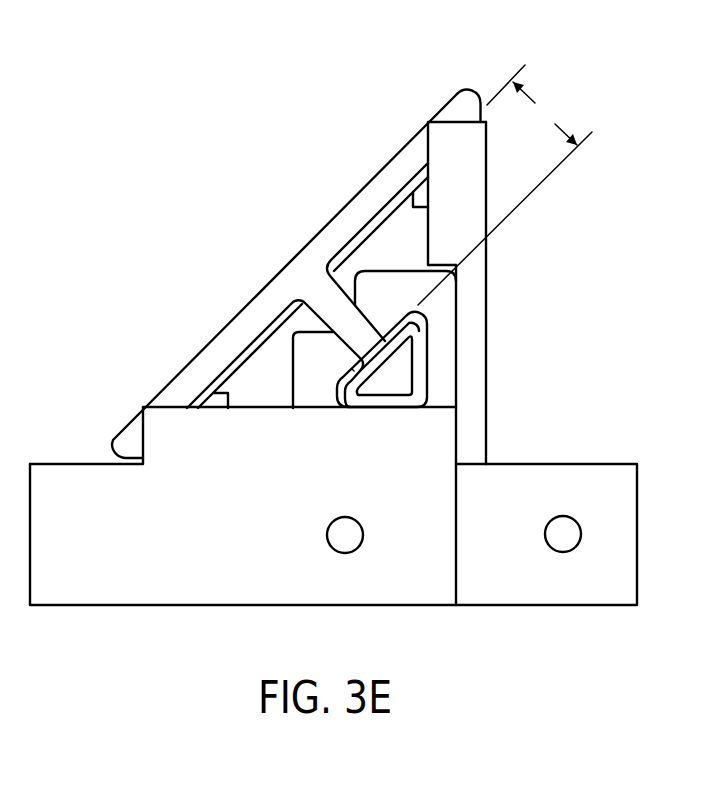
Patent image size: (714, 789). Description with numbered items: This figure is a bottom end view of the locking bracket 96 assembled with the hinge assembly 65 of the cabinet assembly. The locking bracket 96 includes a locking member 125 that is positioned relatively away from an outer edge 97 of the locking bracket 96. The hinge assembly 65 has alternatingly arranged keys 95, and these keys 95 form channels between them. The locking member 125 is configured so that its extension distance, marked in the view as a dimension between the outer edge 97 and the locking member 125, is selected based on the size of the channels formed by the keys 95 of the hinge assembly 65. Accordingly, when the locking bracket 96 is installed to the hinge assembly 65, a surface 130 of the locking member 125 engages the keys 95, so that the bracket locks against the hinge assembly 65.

The hinge assembly 65 is at (557, 46).
The keys 95 is at (437, 312).
The locking bracket 96 is at (167, 382).
The outer edge 97 is at (363, 226).
The locking member 125 is at (420, 365).
The surface 130 is at (350, 368).